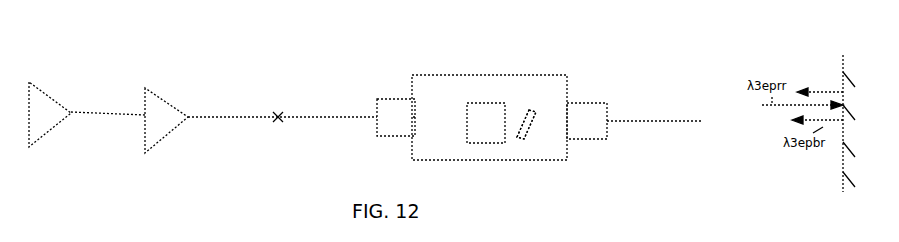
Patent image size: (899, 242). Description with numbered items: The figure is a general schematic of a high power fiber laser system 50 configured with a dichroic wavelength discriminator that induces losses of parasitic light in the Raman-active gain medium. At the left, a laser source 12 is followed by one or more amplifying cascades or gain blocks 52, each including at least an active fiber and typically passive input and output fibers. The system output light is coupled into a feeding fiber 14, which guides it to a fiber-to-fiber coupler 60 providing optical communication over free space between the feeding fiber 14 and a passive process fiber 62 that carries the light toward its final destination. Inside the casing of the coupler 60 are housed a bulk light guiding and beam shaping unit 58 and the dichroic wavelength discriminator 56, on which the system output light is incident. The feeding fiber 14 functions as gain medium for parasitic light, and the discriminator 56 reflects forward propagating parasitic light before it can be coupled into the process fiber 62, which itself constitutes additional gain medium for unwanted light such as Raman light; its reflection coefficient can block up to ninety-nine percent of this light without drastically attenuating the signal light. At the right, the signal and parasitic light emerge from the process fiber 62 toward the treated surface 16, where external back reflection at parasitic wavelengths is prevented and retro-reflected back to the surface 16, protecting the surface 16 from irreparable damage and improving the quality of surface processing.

The laser source 12 is at (55, 120).
The amplifying cascade 52 is at (168, 127).
The feeding fiber 14 is at (282, 108).
The high power fiber laser system 50 is at (333, 80).
The bulk light guiding and beam shaping unit 58 is at (495, 129).
The fiber-to-fiber coupler 60 is at (552, 101).
The dichroic wavelength discriminator 56 is at (532, 125).
The passive process fiber 62 is at (638, 127).
The surface 16 is at (842, 145).